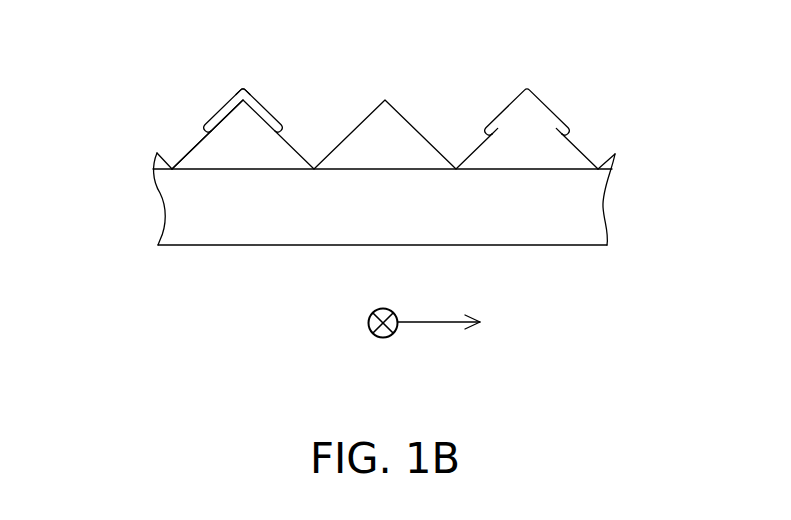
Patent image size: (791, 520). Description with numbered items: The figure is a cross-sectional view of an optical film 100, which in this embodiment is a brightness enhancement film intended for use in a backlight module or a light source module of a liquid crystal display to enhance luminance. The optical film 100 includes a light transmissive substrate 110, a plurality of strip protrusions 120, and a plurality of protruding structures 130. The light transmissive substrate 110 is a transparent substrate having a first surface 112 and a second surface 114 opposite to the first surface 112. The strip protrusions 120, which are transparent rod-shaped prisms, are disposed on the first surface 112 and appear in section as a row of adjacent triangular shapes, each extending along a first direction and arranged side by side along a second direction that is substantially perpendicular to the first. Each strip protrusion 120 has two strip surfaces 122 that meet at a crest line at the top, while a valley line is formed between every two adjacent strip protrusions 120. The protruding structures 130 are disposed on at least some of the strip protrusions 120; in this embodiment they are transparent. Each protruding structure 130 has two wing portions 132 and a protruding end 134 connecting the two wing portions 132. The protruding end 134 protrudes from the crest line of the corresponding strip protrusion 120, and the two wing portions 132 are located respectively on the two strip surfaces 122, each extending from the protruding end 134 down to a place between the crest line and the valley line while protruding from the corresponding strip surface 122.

The optical film 100 is at (375, 178).
The light transmissive substrate 110 is at (344, 163).
The first surface 112 is at (567, 168).
The second surface 114 is at (193, 248).
The strip protrusions 120 is at (373, 138).
The strip surfaces 122 is at (218, 122).
The protruding structures 130 is at (523, 87).
The wing portions 132 is at (223, 108).
The protruding end 134 is at (243, 88).